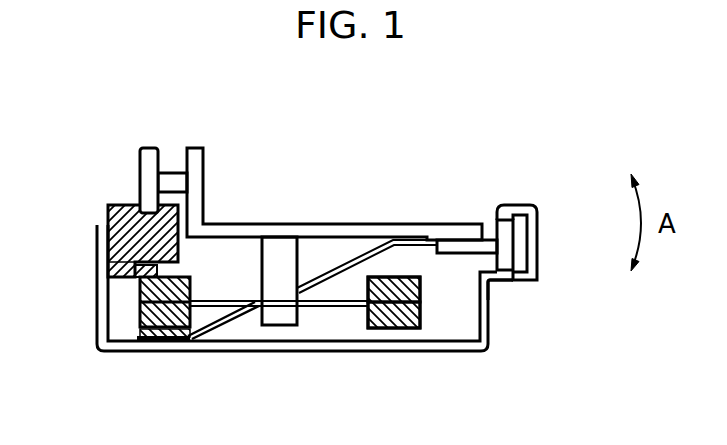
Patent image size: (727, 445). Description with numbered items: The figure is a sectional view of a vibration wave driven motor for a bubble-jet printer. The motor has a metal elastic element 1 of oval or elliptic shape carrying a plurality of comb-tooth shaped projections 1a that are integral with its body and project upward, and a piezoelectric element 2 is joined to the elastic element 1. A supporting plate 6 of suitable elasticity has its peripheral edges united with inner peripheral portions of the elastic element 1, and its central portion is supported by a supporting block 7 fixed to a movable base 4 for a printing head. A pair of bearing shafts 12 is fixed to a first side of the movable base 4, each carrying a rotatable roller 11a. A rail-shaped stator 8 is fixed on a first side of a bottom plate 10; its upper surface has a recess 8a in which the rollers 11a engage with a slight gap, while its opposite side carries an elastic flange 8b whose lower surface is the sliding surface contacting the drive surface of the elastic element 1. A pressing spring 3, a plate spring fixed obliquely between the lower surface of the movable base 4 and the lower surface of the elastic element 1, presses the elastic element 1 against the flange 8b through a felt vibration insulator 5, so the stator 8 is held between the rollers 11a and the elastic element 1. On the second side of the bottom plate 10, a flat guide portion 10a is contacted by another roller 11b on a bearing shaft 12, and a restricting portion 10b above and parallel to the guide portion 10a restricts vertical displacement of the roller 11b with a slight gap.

The elastic element 1 is at (140, 310).
The comb-tooth shaped projections 1a is at (404, 277).
The piezoelectric element 2 is at (408, 328).
The pressing spring 3 is at (349, 262).
The movable base 4 is at (302, 225).
The vibration insulator 5 is at (173, 340).
The supporting plate 6 is at (330, 307).
The supporting block 7 is at (262, 238).
The rail-shaped stator 8 is at (108, 208).
The recess 8a is at (110, 247).
The flange 8b is at (135, 280).
The bottom plate 10 is at (290, 352).
The guide portion 10a is at (515, 281).
The restricting portion 10b is at (507, 206).
The roller 11a is at (142, 160).
The roller 11b is at (527, 237).
The bearing shaft 12 is at (172, 175).